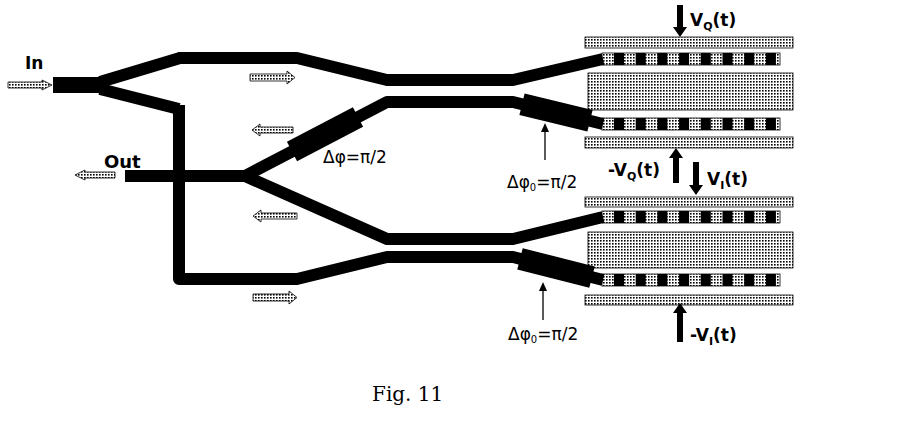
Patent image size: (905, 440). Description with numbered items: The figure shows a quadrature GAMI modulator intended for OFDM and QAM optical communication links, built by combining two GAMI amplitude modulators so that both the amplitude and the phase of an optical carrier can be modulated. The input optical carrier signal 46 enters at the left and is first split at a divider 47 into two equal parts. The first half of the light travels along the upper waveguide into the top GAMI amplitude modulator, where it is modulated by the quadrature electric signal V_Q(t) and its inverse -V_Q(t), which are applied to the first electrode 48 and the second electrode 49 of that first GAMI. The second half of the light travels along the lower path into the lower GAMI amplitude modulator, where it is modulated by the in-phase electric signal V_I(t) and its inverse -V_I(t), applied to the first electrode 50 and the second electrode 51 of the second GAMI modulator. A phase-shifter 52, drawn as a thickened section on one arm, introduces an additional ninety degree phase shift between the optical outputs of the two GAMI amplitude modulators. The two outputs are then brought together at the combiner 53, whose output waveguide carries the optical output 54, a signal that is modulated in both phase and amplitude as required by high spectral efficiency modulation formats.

The input optical carrier signal 46 is at (94, 87).
The divider 47 is at (370, 61).
The first electrode of the first GAMI 48 is at (689, 35).
The second electrode of the first GAMI 49 is at (689, 149).
The first electrode of the second GAMI modulator 50 is at (689, 194).
The second electrode of the second GAMI modulator 51 is at (689, 309).
The phase-shifter 52 is at (325, 128).
The combiner 53 is at (414, 170).
The optical output 54 is at (163, 192).